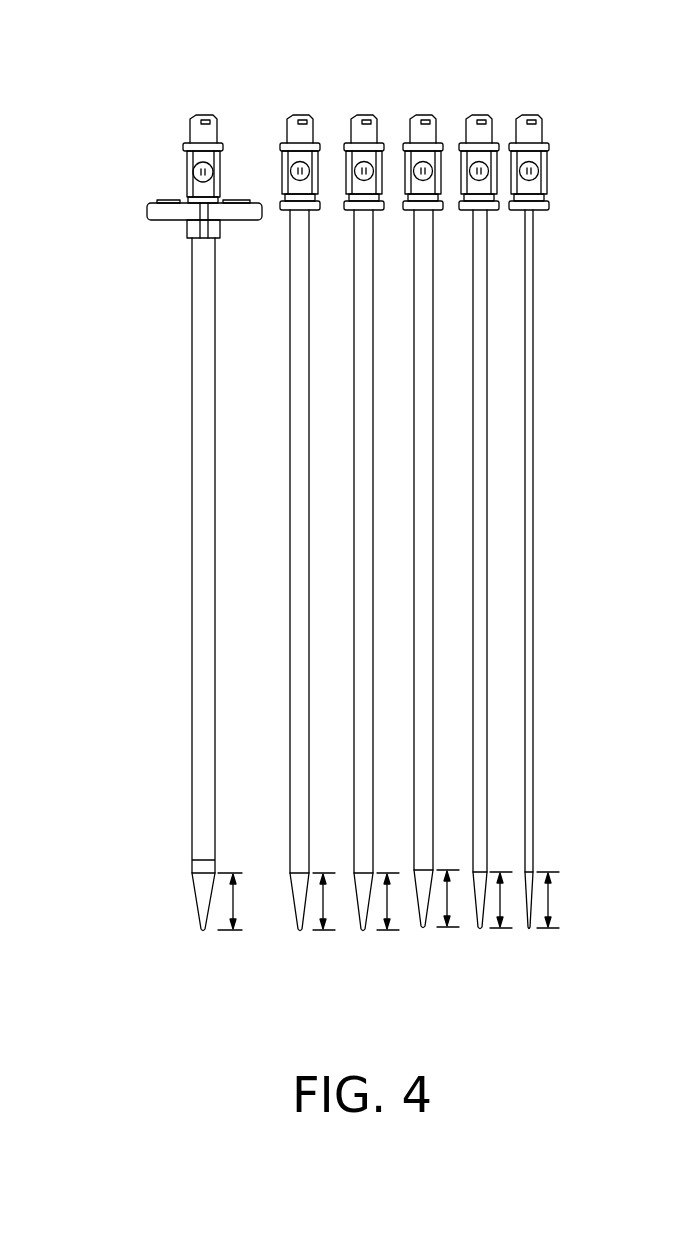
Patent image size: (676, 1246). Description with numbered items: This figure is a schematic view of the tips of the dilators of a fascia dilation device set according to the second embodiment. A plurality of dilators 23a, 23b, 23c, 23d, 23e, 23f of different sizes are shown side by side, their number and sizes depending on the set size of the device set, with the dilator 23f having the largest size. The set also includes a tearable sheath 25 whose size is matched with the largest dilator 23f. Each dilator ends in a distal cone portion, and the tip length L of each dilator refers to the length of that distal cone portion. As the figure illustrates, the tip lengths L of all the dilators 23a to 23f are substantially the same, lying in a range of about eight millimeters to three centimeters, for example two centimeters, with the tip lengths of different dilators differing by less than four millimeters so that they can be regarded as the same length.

The dilator 23a is at (548, 115).
The dilator 23b is at (502, 115).
The dilator 23c is at (443, 115).
The dilator 23d is at (387, 115).
The dilator 23e is at (318, 115).
The dilator 23f is at (225, 116).
The tearable sheath 25 is at (192, 612).